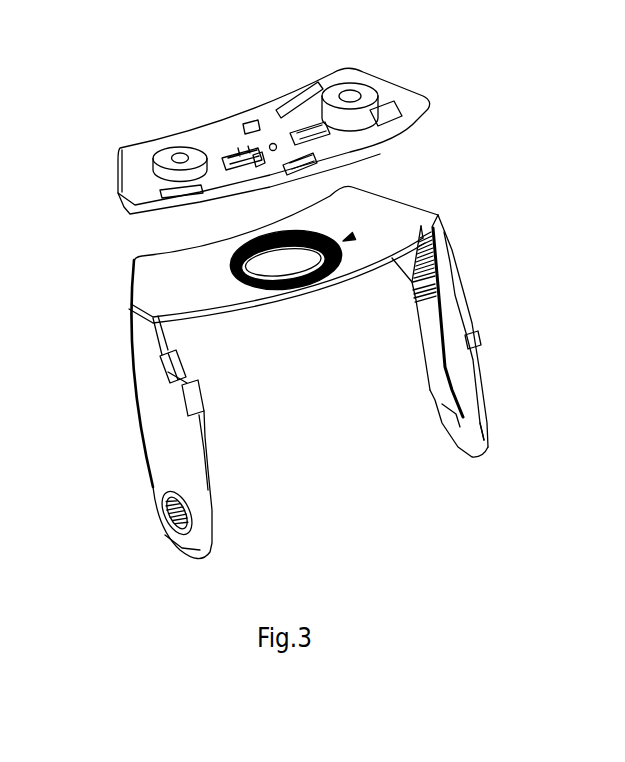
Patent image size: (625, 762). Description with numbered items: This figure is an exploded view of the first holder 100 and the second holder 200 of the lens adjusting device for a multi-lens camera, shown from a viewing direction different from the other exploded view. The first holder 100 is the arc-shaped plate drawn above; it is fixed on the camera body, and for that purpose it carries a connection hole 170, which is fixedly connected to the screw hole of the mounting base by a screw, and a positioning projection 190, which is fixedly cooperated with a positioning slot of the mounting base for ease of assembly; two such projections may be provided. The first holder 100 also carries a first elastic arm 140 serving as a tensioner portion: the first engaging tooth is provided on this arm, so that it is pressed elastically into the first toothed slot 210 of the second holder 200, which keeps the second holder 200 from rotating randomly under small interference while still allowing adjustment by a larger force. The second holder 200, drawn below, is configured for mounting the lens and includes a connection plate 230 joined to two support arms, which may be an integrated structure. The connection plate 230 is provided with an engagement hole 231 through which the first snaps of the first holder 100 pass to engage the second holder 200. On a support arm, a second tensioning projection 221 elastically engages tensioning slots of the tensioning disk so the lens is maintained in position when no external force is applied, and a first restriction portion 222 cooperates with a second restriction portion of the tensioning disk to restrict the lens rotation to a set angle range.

The first holder 100 is at (138, 179).
The first elastic arm 140 is at (236, 152).
The connection hole 170 is at (352, 93).
The positioning projection 190 is at (333, 97).
The second holder 200 is at (118, 421).
The first toothed slot 210 is at (354, 234).
The second tensioning projection 221 is at (446, 366).
The first restriction portion 222 is at (437, 403).
The connection plate 230 is at (157, 287).
The engagement hole 231 is at (282, 272).